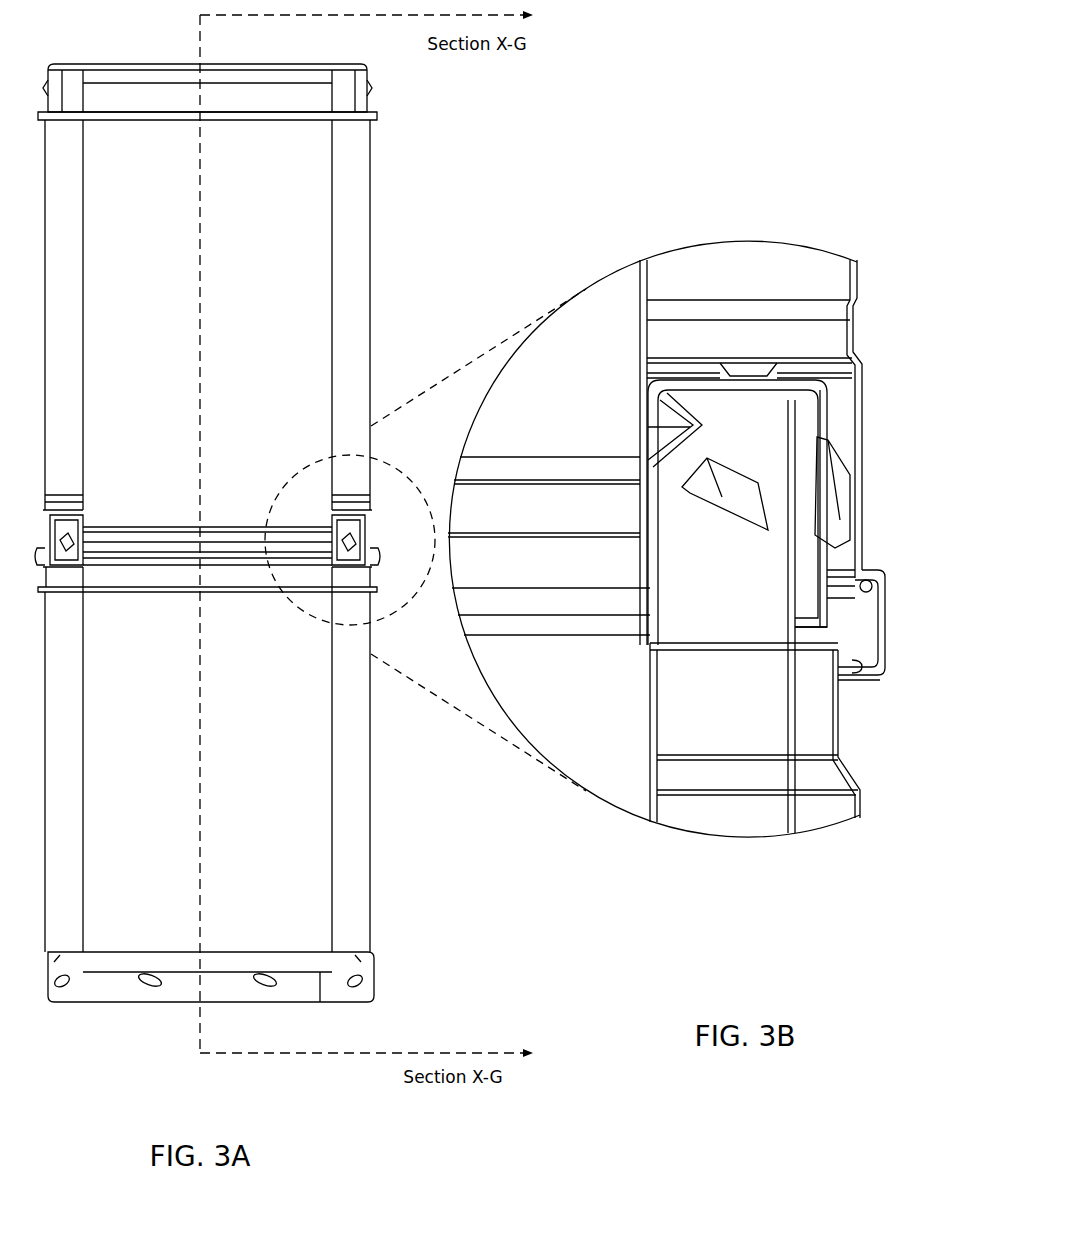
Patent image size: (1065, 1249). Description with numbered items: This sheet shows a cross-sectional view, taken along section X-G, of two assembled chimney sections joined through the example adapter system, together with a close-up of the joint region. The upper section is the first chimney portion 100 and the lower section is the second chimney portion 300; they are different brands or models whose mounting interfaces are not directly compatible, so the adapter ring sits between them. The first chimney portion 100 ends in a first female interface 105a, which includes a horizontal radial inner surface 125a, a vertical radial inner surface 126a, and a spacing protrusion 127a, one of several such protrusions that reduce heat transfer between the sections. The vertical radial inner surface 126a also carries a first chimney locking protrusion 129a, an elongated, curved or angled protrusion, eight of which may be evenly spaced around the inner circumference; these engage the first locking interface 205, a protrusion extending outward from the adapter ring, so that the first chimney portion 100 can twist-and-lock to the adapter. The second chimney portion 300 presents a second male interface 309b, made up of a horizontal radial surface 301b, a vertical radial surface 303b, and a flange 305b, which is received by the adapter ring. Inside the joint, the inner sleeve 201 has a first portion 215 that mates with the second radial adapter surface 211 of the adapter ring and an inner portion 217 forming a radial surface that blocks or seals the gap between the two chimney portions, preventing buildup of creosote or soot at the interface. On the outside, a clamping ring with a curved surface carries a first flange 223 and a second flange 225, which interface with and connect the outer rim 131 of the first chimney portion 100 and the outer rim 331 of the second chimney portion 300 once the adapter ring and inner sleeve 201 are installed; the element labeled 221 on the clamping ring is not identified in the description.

In FIG. 3A, the first chimney portion 100 is at (432, 150).
In FIG. 3A, the second chimney portion 300 is at (424, 926).
In FIG. 3B, the first female interface 105a is at (790, 385).
In FIG. 3B, the spacing protrusion 127a is at (737, 370).
In FIG. 3B, the horizontal radial inner surface 125a is at (787, 363).
In FIG. 3B, the vertical radial inner surface 126a is at (848, 382).
In FIG. 3B, the first chimney locking protrusion 129a is at (887, 375).
In FIG. 3B, the inner sleeve 201 is at (650, 427).
In FIG. 3B, the first portion 215 is at (687, 377).
In FIG. 3B, the inner portion 217 is at (647, 492).
In FIG. 3B, the second radial adapter surface 211 is at (797, 382).
In FIG. 3B, the first locking interface 205 is at (850, 490).
In FIG. 3B, the outer rim 131 is at (868, 575).
In FIG. 3B, the first flange 223 is at (870, 581).
In FIG. 3B, the latch 221 is at (886, 640).
In FIG. 3B, the outer rim 331 is at (864, 666).
In FIG. 3B, the second flange 225 is at (880, 680).
In FIG. 3B, the horizontal radial surface 301b is at (722, 392).
In FIG. 3B, the vertical radial surface 303b is at (790, 560).
In FIG. 3B, the flange 305b is at (822, 600).
In FIG. 3B, the second male interface 309b is at (755, 672).